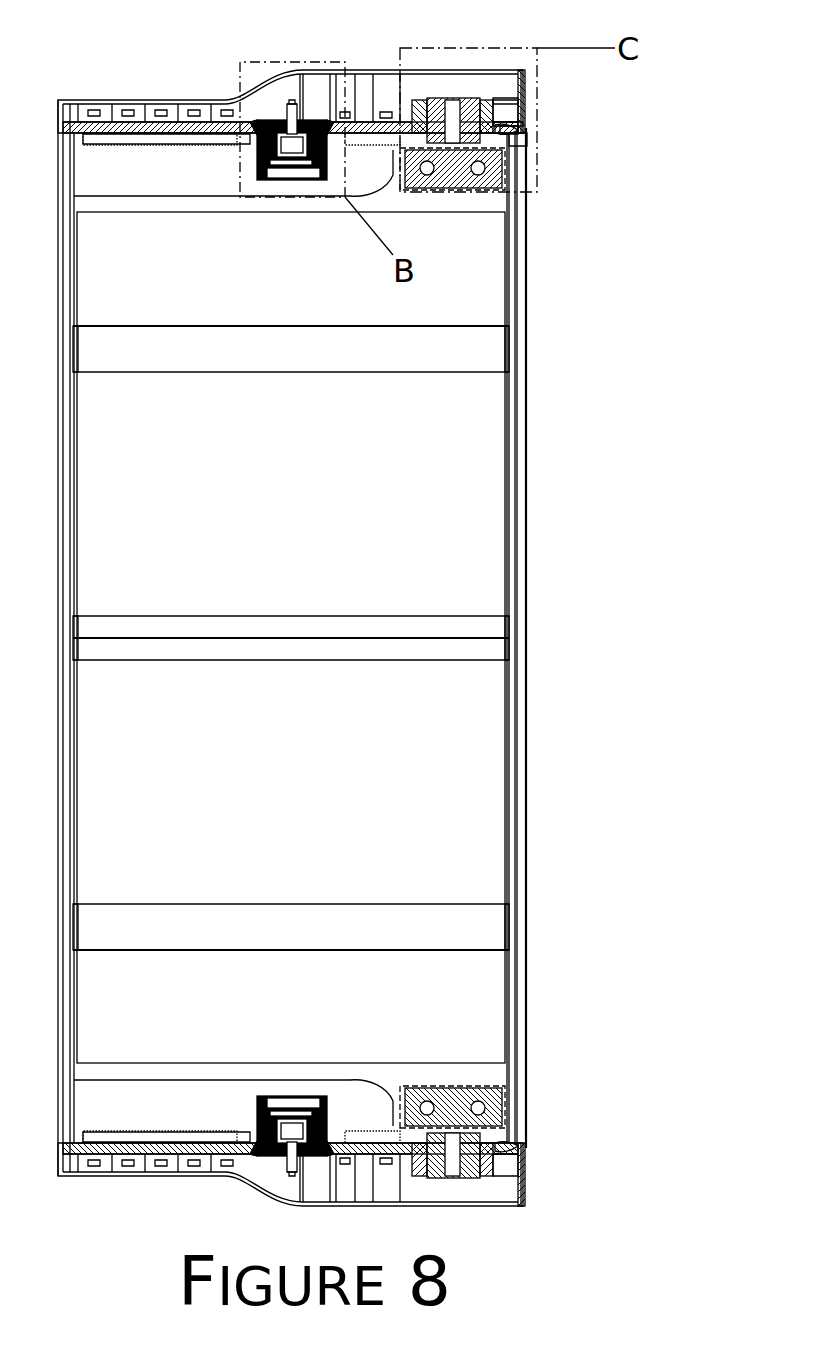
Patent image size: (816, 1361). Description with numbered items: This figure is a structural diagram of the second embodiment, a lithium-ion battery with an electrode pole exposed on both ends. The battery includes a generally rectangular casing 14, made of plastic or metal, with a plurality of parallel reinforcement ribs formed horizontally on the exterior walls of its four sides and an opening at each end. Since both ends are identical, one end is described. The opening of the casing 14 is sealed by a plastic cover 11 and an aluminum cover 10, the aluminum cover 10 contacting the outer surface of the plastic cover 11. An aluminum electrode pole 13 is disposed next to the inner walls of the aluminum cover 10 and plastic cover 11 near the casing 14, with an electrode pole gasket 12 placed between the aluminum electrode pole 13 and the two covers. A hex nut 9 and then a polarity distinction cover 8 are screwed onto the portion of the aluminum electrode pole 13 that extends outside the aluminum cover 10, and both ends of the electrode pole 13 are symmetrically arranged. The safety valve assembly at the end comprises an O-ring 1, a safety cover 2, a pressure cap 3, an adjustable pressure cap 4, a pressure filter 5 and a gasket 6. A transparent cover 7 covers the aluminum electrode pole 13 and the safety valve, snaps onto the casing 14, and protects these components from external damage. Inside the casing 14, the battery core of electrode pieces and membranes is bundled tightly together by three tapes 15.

The O-ring 1 is at (250, 125).
The safety cover 2 is at (263, 120).
The pressure cap 3 is at (275, 120).
The adjustable pressure cap 4 is at (292, 133).
The pressure filter 5 is at (300, 118).
The gasket 6 is at (333, 157).
The transparent cover 7 is at (523, 88).
The polarity distinction cover 8 is at (492, 102).
The hex nut 9 is at (500, 116).
The aluminum cover 10 is at (518, 129).
The plastic cover 11 is at (523, 131).
The electrode pole gasket 12 is at (530, 145).
The aluminum electrode pole 13 is at (485, 167).
The casing 14 is at (525, 226).
The tapes 15 is at (508, 349).